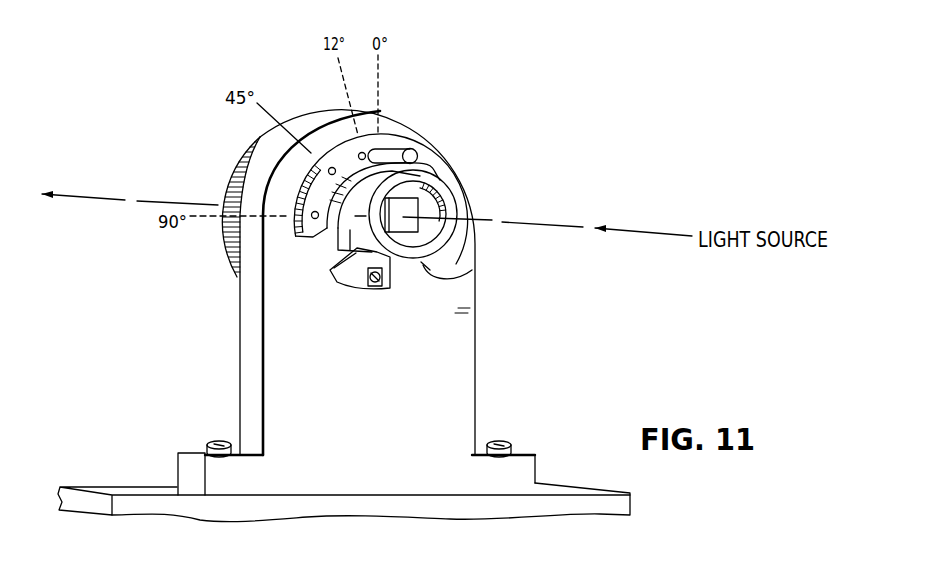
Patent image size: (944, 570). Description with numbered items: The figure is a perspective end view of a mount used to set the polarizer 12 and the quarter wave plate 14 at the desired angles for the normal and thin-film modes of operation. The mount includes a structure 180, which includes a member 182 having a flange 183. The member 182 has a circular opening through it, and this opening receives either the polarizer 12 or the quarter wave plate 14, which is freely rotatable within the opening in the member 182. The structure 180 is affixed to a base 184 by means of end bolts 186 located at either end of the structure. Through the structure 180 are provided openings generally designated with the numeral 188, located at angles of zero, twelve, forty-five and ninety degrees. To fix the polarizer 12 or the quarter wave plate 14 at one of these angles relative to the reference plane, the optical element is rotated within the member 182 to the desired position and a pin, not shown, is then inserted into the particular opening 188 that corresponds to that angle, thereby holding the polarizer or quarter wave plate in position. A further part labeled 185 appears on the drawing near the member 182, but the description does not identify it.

The polarizer 12 is at (511, 188).
The quarter wave plate 14 is at (415, 208).
The structure 180 is at (250, 311).
The member 182 is at (345, 242).
The flange 183 is at (472, 272).
The base 184 is at (97, 488).
The clamp 185 is at (371, 288).
The end bolts 186 is at (213, 441).
The openings 188 is at (360, 152).